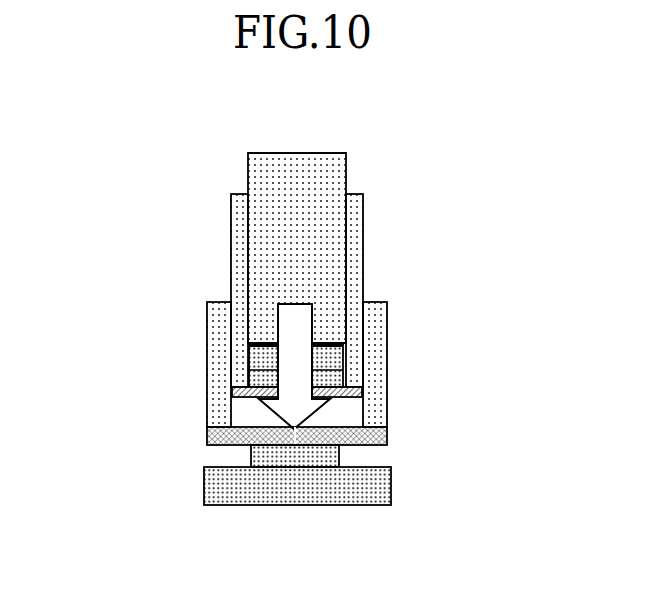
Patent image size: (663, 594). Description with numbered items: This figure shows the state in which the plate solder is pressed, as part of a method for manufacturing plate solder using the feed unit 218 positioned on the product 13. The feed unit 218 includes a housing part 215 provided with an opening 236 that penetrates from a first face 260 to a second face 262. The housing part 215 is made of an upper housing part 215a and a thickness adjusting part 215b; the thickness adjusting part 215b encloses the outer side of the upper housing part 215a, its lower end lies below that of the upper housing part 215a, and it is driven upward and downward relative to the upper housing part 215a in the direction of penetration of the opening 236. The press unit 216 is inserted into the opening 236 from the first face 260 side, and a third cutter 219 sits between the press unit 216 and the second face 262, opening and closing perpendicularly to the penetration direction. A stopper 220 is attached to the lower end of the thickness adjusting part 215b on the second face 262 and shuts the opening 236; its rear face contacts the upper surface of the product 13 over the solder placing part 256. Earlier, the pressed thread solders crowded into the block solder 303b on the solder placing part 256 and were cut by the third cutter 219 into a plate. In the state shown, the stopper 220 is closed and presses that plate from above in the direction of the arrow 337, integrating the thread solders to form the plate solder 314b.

The product 13 is at (379, 486).
The housing part 215 is at (92, 124).
The upper housing part 215a is at (243, 211).
The thickness adjusting part 215b is at (220, 349).
The press unit 216 is at (296, 167).
The feed unit 218 is at (228, 266).
The third cutter 219 is at (240, 390).
The stopper 220 is at (207, 440).
The opening 236 is at (347, 226).
The solder placing part 256 is at (293, 467).
The first face 260 is at (352, 194).
The second face 262 is at (374, 426).
The block solder 303b is at (335, 350).
The plate solder 314b is at (339, 455).
The arrow 337 is at (302, 323).